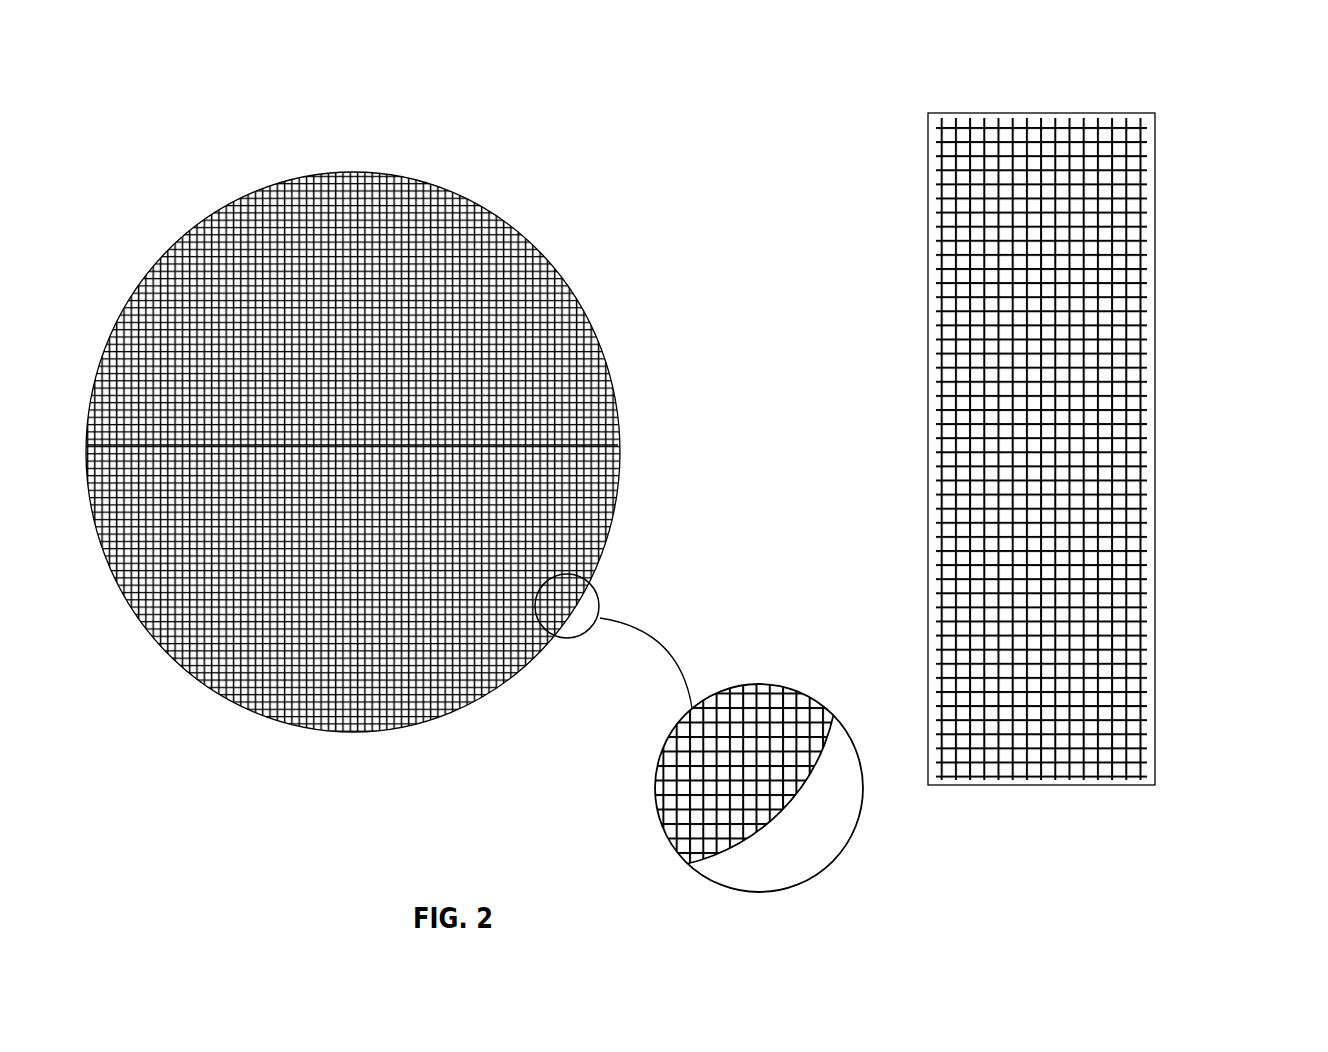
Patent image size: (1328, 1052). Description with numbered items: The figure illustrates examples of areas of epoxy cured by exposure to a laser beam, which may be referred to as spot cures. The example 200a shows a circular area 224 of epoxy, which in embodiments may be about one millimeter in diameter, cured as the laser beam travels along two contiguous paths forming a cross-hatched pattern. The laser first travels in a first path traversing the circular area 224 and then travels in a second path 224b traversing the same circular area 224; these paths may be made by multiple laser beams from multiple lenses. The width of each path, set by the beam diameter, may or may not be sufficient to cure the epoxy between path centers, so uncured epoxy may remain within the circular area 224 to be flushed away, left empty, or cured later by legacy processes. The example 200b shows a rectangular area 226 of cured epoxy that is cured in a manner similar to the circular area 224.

The circular area example figure 200a is at (417, 425).
The rectangular area example figure 200b is at (1124, 397).
The circular area 224 is at (585, 317).
The second path 224b is at (702, 688).
The rectangular area 226 is at (1152, 172).